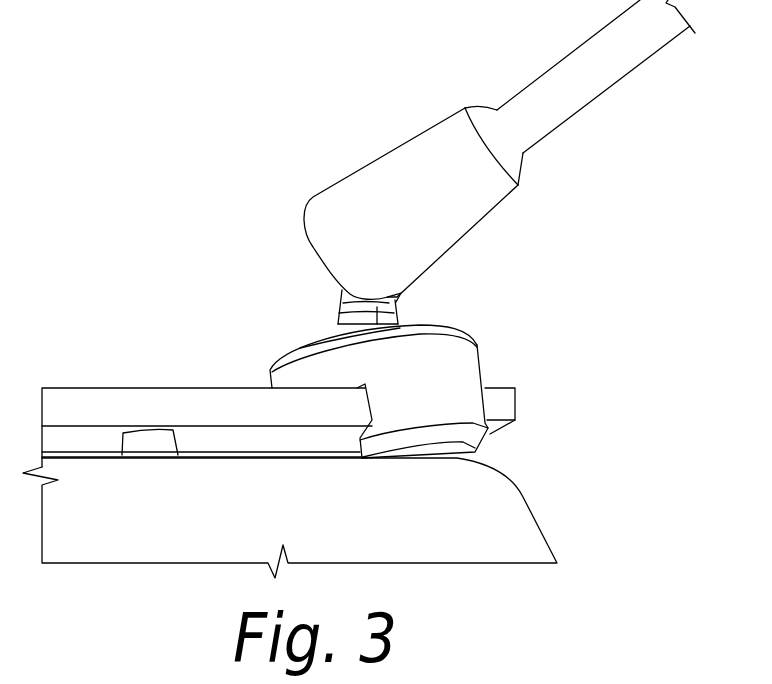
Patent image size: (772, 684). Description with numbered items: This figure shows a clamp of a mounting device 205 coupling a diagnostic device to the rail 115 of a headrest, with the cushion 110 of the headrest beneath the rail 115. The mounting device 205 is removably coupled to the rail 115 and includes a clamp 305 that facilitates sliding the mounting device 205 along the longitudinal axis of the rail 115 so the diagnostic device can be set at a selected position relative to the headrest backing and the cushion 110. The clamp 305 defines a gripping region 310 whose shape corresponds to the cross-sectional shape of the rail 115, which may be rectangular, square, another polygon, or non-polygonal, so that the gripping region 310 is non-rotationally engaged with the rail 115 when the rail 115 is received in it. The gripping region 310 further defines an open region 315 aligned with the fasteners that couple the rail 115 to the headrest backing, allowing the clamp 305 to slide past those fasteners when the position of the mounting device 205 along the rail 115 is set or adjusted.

The mounting device 205 is at (600, 30).
The clamp 305 is at (303, 367).
The gripping region 310 is at (428, 384).
The open region 315 is at (343, 460).
The rail 115 is at (63, 388).
The cushion 110 is at (527, 518).